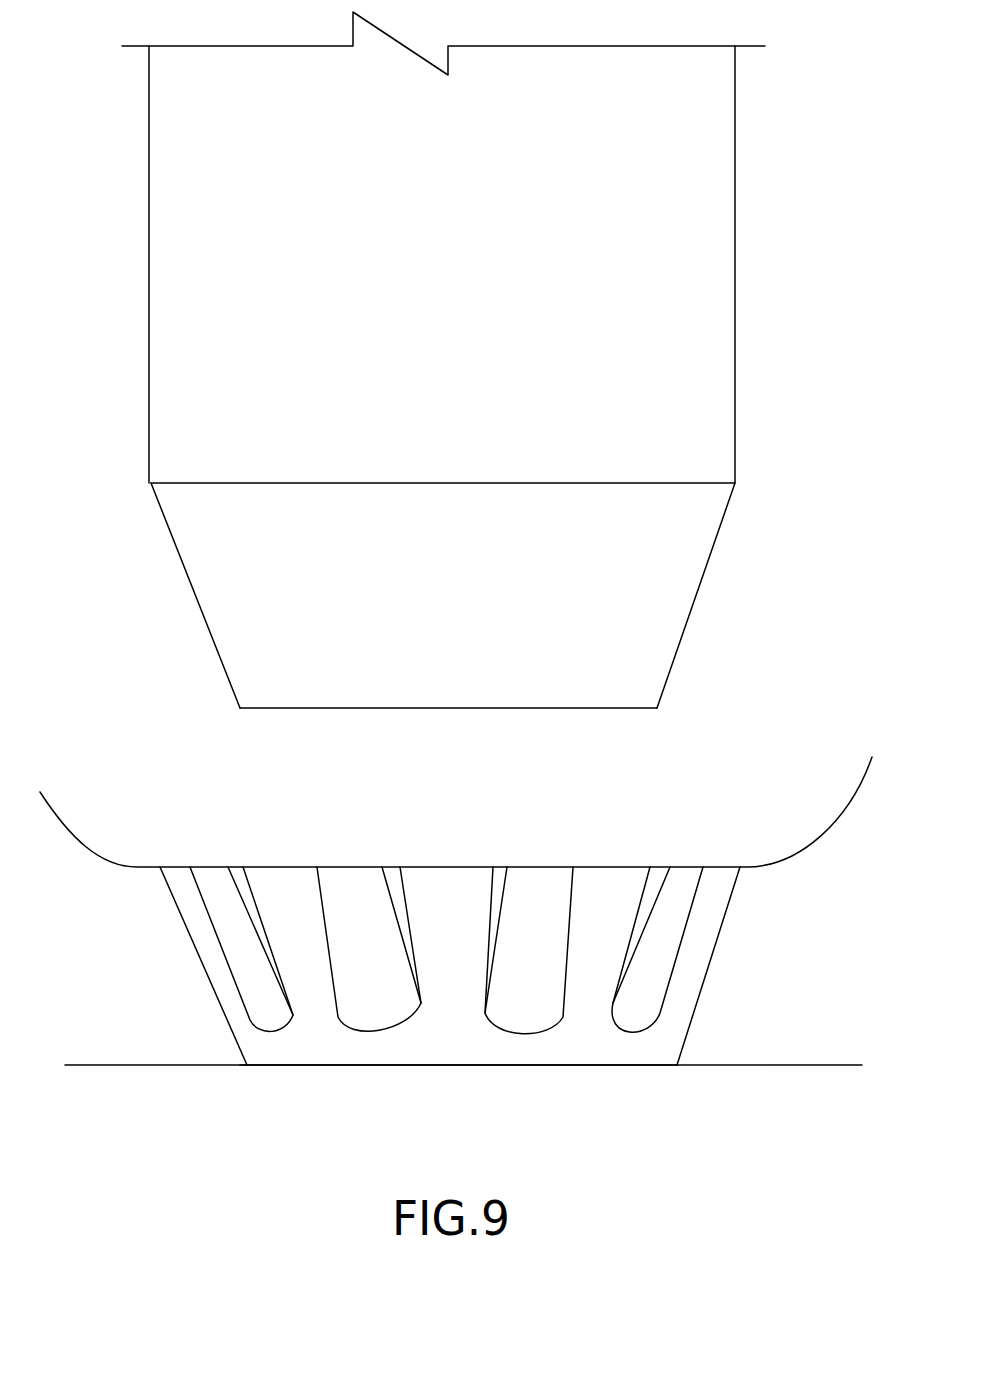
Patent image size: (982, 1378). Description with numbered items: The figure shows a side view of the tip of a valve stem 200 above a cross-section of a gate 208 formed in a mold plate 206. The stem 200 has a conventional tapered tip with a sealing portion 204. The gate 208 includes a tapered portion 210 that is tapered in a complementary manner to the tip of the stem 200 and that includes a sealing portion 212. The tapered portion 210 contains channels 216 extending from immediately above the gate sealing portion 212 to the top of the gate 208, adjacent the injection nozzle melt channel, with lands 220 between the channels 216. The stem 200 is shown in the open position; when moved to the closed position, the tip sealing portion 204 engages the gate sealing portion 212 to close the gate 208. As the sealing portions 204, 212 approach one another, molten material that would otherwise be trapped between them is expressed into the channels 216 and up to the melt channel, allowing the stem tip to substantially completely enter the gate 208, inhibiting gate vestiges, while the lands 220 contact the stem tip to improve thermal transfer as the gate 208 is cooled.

The valve stem 200 is at (782, 183).
The sealing portion 204 is at (445, 595).
The mold plate 206 is at (100, 958).
The gate 208 is at (458, 1120).
The tapered portion 210 is at (464, 966).
The sealing portion 212 is at (218, 1052).
The channels 216 is at (387, 963).
The lands 220 is at (313, 919).